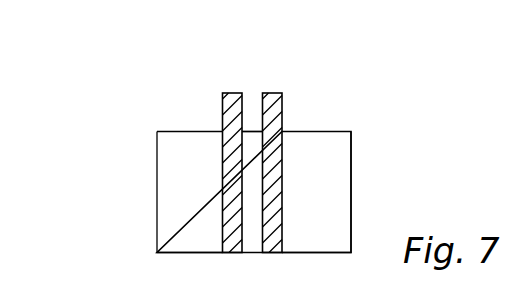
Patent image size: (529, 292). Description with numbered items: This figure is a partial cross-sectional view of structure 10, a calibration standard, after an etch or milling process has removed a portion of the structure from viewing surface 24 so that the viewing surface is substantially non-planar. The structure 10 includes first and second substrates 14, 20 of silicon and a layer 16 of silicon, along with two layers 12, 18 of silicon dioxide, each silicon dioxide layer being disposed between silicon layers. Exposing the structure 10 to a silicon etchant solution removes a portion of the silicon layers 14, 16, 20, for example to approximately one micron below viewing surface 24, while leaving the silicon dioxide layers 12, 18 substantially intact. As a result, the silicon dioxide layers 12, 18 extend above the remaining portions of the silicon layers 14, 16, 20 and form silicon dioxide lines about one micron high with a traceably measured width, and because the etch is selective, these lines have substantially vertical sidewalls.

The structure 10 is at (215, 137).
The layer 12 is at (235, 112).
The first substrate 14 is at (200, 245).
The layer 16 is at (255, 151).
The layer 18 is at (275, 110).
The second substrate 20 is at (335, 245).
The viewing surface 24 is at (283, 137).